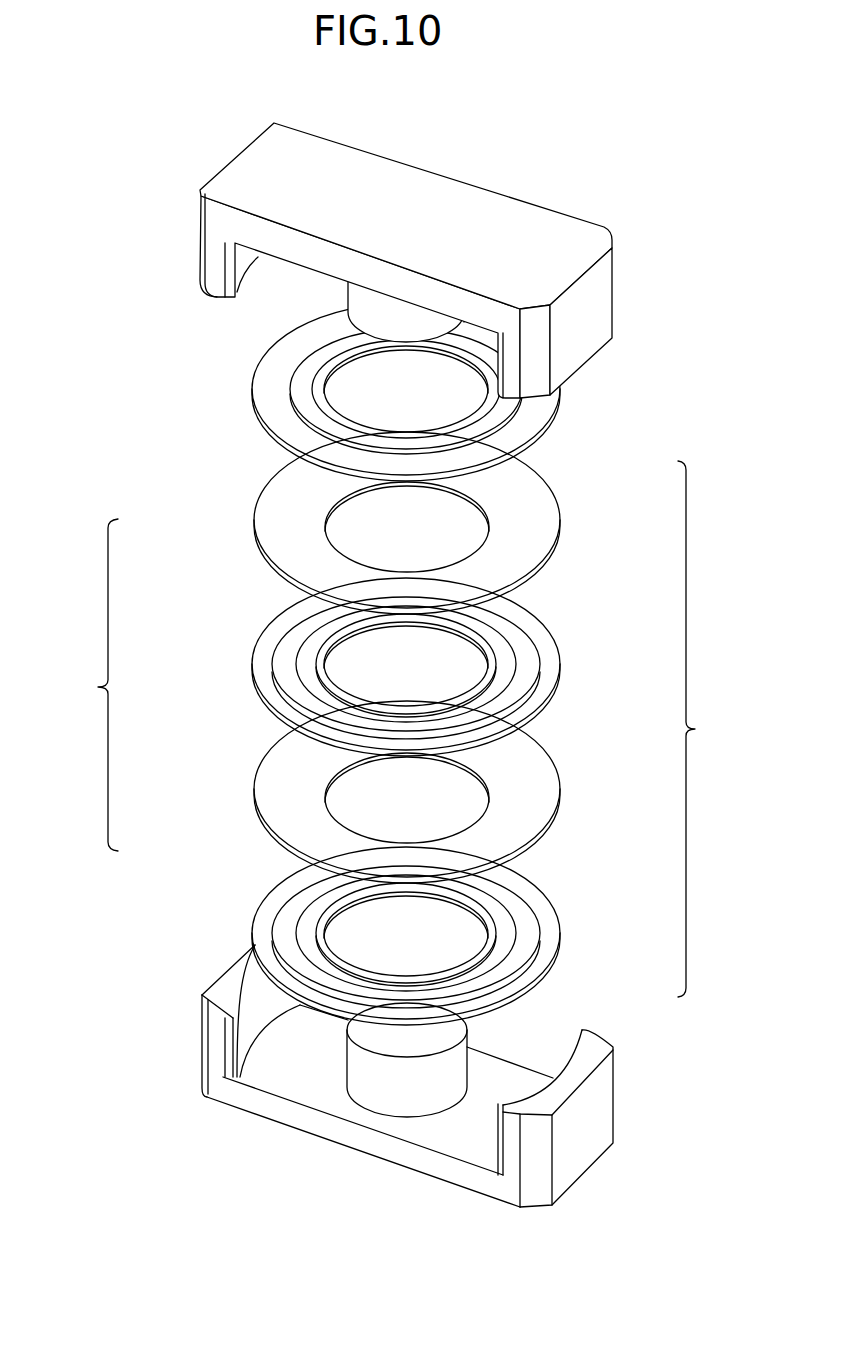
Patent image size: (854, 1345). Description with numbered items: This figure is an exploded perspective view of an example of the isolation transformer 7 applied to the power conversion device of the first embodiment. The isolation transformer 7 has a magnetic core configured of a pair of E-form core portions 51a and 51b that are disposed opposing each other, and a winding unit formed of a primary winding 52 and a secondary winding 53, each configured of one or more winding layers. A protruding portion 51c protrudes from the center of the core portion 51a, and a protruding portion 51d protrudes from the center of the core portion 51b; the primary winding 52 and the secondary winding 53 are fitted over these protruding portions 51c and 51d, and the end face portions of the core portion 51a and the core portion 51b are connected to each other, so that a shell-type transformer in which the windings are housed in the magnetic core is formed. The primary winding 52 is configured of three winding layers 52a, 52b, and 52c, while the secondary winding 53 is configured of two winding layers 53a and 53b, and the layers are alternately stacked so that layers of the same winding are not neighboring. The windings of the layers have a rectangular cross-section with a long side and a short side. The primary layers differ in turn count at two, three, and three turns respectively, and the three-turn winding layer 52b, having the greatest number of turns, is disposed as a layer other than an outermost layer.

The isolation transformer 7 is at (636, 182).
The core portion 51a is at (200, 233).
The core portion 51b is at (220, 1097).
The protruding portion 51c is at (380, 313).
The protruding portion 51d is at (363, 1062).
The primary winding 52 is at (707, 729).
The winding layer 52a is at (557, 413).
The winding layer 52b is at (559, 668).
The winding layer 52c is at (561, 938).
The secondary winding 53 is at (88, 685).
The winding layer 53a is at (256, 535).
The winding layer 53b is at (256, 798).